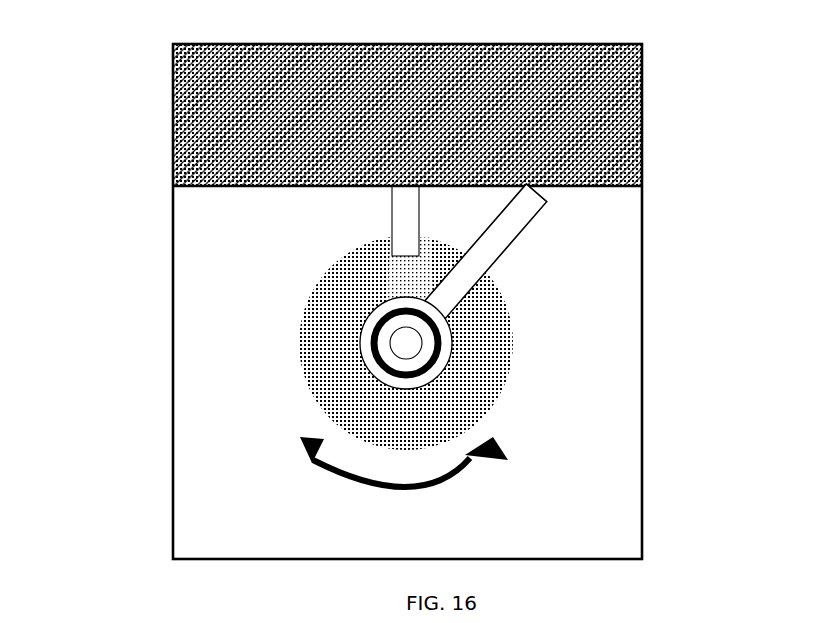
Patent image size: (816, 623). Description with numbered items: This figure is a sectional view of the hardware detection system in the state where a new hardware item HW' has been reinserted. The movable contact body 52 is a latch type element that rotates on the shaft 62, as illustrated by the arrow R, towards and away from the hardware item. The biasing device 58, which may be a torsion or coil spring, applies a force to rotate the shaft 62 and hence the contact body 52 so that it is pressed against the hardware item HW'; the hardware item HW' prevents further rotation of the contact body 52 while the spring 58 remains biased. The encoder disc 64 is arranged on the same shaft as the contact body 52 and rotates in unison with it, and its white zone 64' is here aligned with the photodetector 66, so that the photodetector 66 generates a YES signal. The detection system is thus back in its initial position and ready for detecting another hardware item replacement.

The new hardware item HW' is at (461, 97).
The photodetector 66 is at (406, 184).
The movable contact body 52 is at (493, 265).
The encoder disc 64 is at (508, 343).
The white zone 64' is at (255, 238).
The biasing device 58 is at (428, 373).
The shaft 62 is at (406, 363).
The arrow R is at (306, 452).